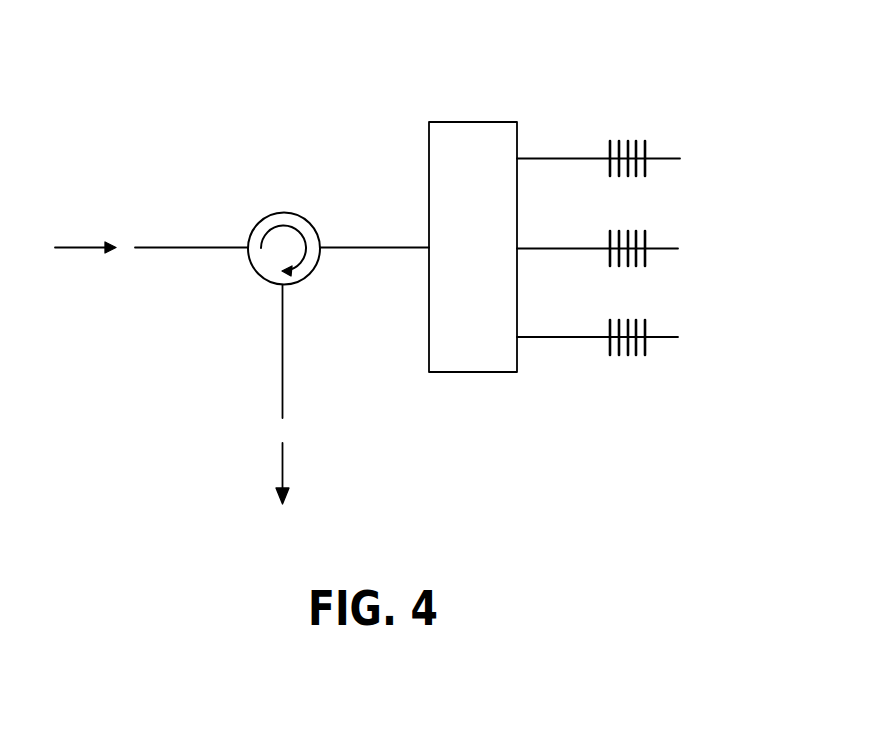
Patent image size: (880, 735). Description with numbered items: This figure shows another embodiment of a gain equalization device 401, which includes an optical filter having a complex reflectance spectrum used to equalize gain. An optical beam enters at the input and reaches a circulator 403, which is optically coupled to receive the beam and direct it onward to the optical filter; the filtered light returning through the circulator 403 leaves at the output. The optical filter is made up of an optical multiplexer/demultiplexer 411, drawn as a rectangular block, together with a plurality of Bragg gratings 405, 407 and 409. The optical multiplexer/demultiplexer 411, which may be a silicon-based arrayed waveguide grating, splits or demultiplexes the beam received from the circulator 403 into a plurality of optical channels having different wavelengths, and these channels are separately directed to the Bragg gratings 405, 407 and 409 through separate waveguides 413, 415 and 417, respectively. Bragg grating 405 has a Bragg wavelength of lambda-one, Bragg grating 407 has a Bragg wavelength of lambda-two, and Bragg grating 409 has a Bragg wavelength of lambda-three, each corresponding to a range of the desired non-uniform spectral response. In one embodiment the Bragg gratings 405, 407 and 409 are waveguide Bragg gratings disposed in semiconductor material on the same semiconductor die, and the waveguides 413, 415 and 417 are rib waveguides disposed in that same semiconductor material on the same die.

The gain equalization device 401 is at (723, 42).
The circulator 403 is at (287, 211).
The Bragg grating 405 is at (632, 134).
The Bragg grating 407 is at (632, 226).
The Bragg grating 409 is at (632, 314).
The optical multiplexer/demultiplexer 411 is at (473, 122).
The waveguide 413 is at (533, 158).
The waveguide 415 is at (533, 248).
The waveguide 417 is at (532, 337).